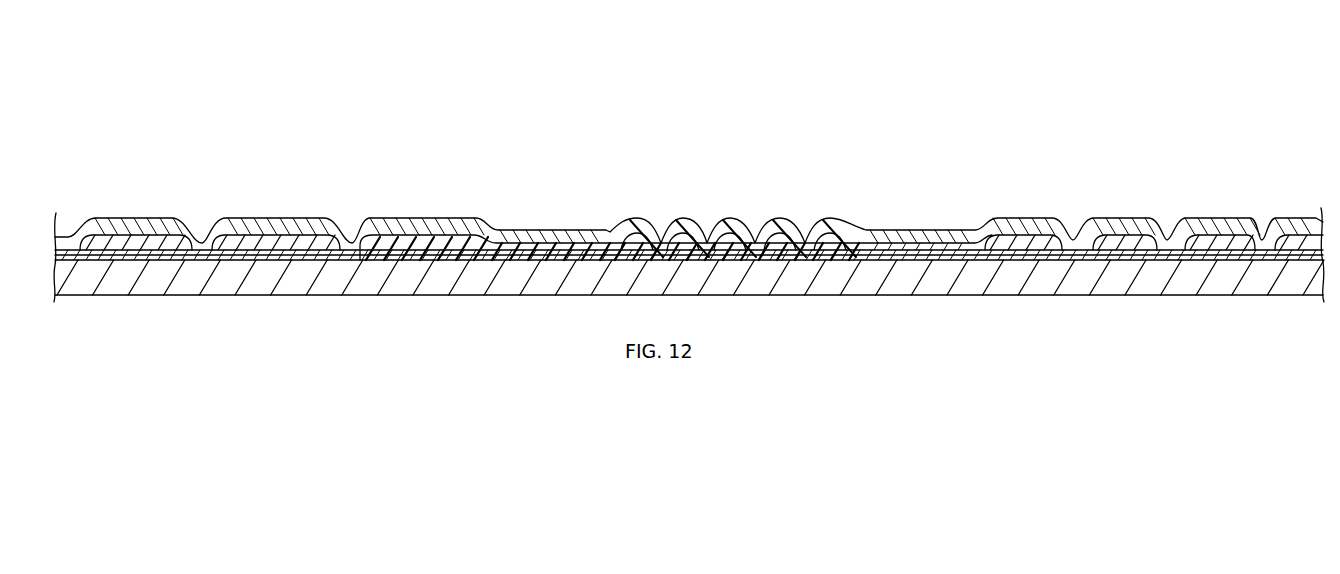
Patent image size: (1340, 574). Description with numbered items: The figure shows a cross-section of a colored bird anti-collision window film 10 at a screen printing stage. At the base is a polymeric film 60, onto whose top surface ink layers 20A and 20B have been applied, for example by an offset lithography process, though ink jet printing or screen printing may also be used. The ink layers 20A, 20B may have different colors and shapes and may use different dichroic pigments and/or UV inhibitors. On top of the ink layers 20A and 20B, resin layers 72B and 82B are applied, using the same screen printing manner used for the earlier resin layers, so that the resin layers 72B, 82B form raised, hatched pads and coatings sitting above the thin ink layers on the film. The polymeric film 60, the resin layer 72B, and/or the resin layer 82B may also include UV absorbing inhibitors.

The electronic device / laminate assembly 10 is at (212, 59).
The ink layer 20A is at (162, 262).
The ink layer 20B is at (953, 258).
The polymeric film 60 is at (288, 297).
The resin layer 72B is at (275, 237).
The resin layer 82B is at (128, 219).